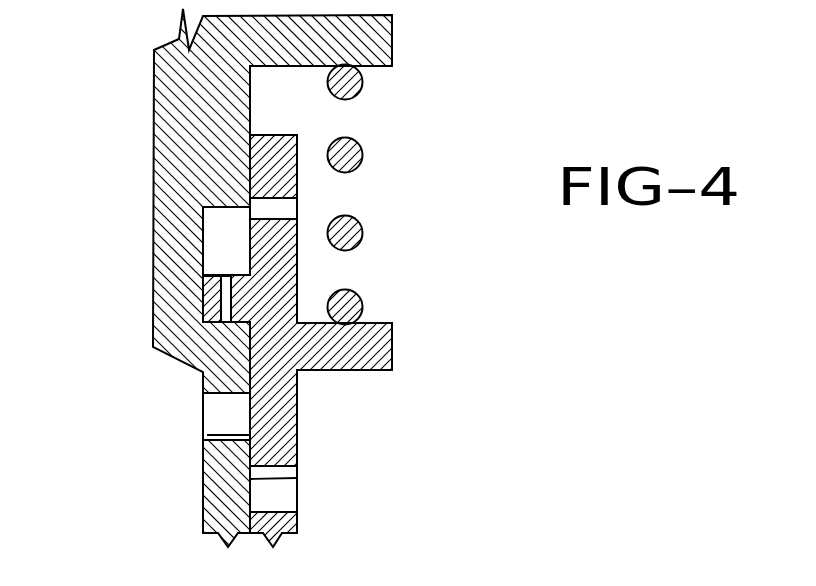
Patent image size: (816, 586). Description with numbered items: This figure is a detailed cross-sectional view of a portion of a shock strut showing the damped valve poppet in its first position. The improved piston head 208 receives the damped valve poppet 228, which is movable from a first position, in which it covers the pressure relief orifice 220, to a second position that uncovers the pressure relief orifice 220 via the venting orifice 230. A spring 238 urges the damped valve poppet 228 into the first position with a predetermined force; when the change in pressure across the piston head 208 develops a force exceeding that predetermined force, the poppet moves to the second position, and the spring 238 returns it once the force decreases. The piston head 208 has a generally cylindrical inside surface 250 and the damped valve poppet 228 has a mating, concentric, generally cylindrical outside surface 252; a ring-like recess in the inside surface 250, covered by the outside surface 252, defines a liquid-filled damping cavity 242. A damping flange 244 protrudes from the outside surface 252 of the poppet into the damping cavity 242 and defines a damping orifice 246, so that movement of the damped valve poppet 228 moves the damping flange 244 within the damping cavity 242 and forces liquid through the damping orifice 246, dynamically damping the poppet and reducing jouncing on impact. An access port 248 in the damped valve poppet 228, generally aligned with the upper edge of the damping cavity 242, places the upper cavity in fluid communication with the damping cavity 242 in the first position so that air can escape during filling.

The improved piston head 208 is at (153, 143).
The damped valve poppet 228 is at (297, 422).
The spring 238 is at (353, 153).
The damping cavity 242 is at (223, 245).
The damping flange 244 is at (226, 292).
The damping orifice 246 is at (228, 301).
The access port 248 is at (292, 210).
The pressure relief orifice 220 is at (215, 402).
The outside surface 252 is at (207, 435).
The inside surface 250 is at (297, 478).
The venting orifice 230 is at (267, 495).